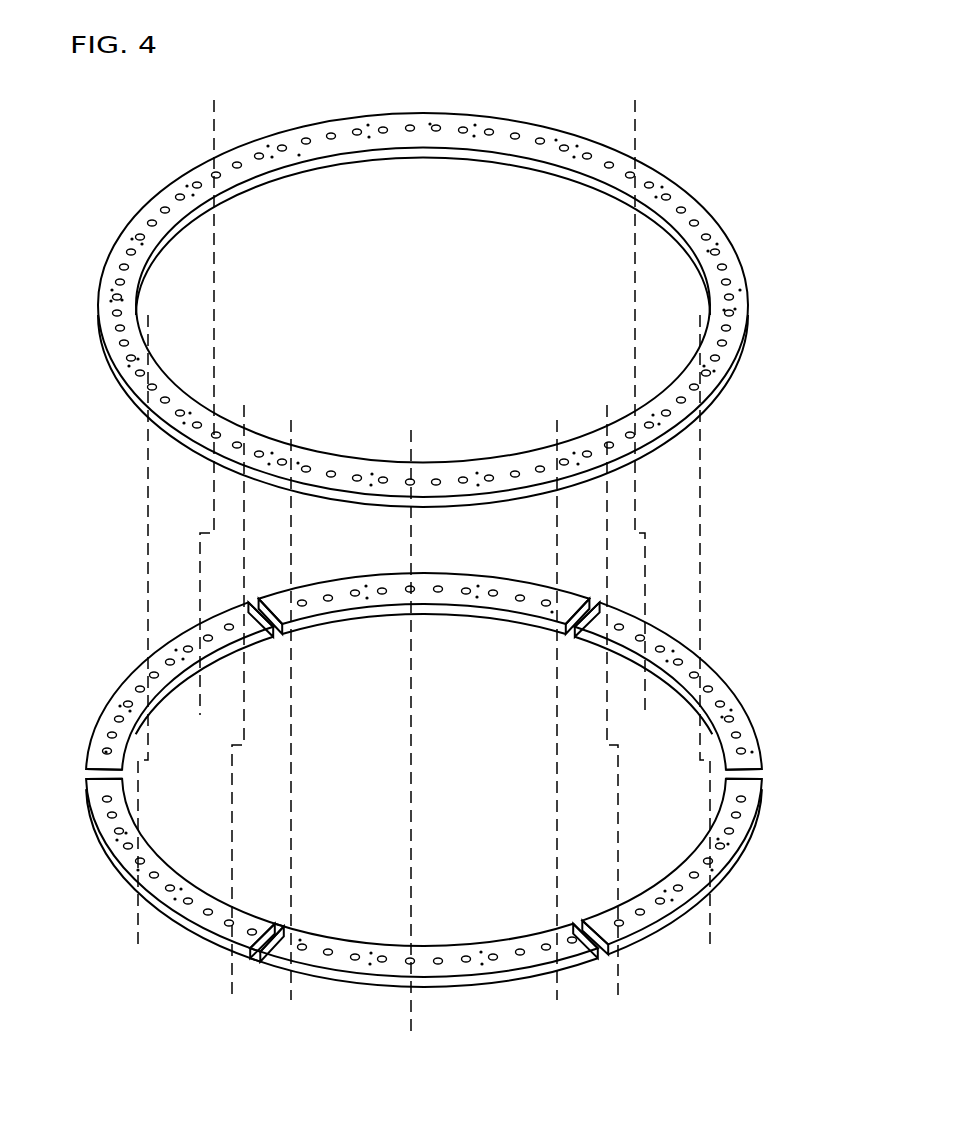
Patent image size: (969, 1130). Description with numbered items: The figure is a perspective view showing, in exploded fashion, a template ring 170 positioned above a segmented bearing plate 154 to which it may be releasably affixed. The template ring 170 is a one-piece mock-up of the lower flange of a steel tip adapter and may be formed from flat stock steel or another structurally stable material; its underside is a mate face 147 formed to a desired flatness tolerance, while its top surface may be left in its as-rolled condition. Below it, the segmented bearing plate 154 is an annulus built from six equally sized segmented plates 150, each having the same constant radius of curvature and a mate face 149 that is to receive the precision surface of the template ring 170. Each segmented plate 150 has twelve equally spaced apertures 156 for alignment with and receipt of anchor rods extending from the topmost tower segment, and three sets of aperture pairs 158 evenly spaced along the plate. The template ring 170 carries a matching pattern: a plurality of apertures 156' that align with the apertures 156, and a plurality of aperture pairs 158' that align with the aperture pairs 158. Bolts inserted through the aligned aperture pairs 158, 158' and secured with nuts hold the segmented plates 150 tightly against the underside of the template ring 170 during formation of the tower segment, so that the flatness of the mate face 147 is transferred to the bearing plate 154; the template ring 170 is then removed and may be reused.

The mate face 147 is at (478, 138).
The mate face 149 is at (371, 583).
The segmented plate 150 is at (477, 585).
The segmented bearing plate 154 is at (424, 775).
The apertures 156 is at (424, 775).
The aperture pairs 158 is at (424, 774).
The template ring 170 is at (425, 287).
The apertures 156' is at (425, 277).
The aperture pairs 158' is at (425, 277).